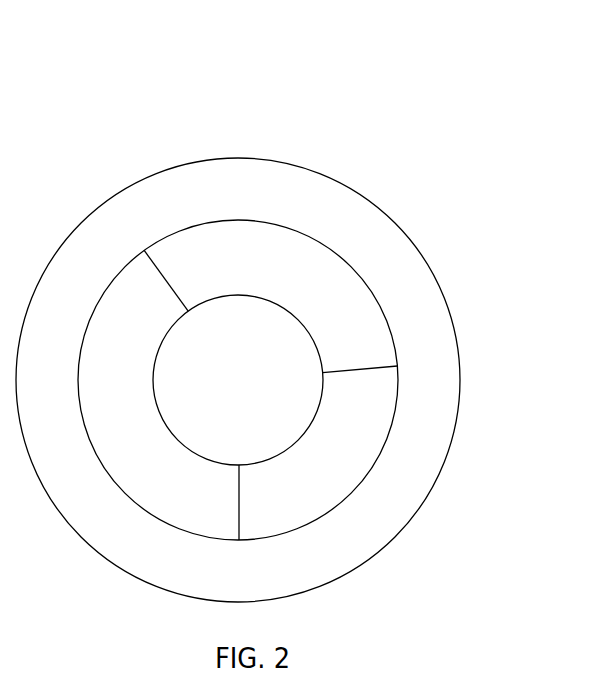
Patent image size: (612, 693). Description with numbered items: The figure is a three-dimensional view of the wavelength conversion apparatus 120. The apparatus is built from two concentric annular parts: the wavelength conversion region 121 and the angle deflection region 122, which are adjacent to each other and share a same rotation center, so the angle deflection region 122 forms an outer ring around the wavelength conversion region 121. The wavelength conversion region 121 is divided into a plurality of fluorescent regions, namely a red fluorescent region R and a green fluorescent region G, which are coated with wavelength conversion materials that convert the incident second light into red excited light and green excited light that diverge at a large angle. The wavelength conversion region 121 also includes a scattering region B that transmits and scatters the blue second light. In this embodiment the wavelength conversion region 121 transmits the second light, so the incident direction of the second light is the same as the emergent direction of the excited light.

The wavelength conversion apparatus 120 is at (258, 75).
The wavelength conversion region 121 is at (337, 292).
The angle deflection region 122 is at (433, 385).